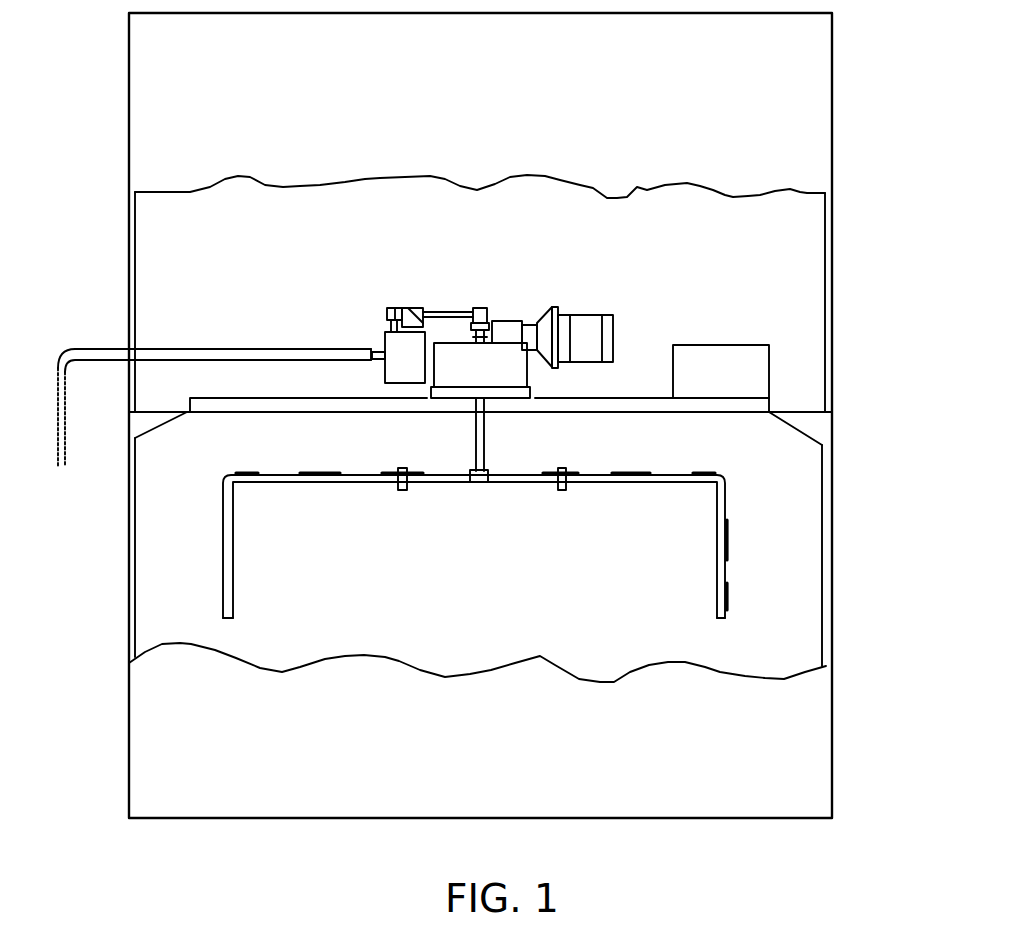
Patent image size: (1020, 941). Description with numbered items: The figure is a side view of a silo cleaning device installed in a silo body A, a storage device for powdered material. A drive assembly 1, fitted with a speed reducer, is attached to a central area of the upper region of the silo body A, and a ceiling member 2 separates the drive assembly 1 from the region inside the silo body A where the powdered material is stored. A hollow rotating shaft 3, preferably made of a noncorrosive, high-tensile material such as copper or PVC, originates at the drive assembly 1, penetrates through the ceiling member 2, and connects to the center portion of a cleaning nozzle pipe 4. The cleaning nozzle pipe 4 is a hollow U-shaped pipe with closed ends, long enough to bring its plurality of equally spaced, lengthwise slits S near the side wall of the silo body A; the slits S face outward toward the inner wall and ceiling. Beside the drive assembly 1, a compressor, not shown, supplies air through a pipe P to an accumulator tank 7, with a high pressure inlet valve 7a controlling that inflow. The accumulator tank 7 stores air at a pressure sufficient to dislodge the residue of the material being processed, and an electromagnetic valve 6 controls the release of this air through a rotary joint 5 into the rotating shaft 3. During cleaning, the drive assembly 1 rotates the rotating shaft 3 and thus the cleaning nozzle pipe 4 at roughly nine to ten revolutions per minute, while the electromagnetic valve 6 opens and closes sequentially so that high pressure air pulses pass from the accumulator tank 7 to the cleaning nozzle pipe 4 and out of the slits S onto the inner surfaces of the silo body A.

The silo body A is at (793, 107).
The drive assembly 1 is at (495, 362).
The ceiling member 2 is at (695, 403).
The rotating shaft 3 is at (483, 439).
The cleaning nozzle pipe 4 is at (727, 487).
The rotary joint 5 is at (478, 310).
The electromagnetic valve 6 is at (387, 315).
The accumulator tank 7 is at (390, 367).
The high pressure inlet valve 7a is at (373, 355).
The pipe P is at (72, 357).
The slits S is at (768, 557).